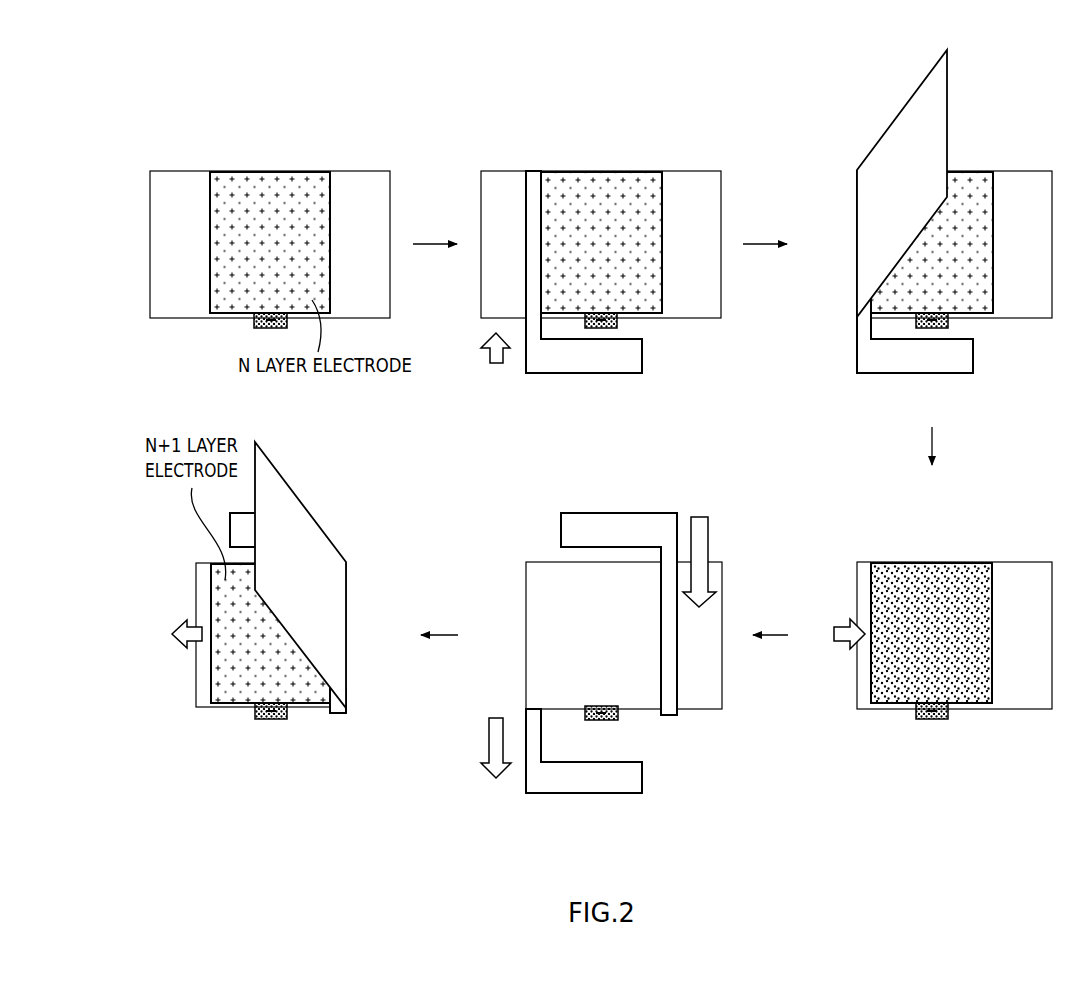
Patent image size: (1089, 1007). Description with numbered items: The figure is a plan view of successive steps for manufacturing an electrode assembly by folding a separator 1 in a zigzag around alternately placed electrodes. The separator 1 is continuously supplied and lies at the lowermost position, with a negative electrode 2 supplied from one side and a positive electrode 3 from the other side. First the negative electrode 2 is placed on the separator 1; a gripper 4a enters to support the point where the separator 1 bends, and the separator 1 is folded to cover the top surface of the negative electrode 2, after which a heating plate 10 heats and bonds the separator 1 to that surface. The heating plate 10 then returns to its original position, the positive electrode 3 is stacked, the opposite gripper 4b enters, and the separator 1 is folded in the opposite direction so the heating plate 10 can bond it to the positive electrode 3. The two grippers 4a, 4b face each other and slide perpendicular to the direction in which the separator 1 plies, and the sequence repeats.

The separator 1 is at (160, 243).
The negative electrode 2 is at (270, 180).
The positive electrode 3 is at (228, 695).
The gripper 4a is at (585, 790).
The gripper 4b is at (649, 520).
The heating plate 10 is at (889, 690).